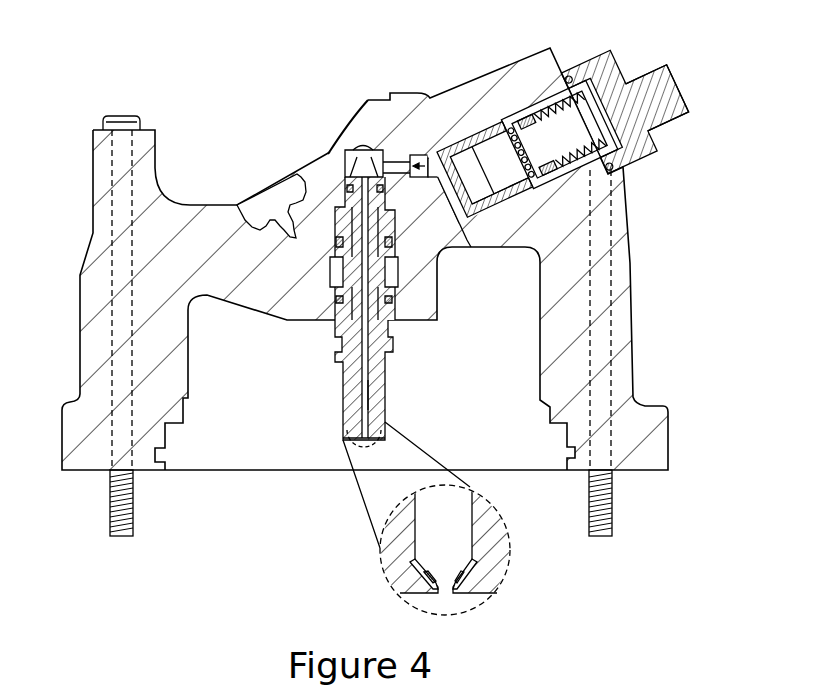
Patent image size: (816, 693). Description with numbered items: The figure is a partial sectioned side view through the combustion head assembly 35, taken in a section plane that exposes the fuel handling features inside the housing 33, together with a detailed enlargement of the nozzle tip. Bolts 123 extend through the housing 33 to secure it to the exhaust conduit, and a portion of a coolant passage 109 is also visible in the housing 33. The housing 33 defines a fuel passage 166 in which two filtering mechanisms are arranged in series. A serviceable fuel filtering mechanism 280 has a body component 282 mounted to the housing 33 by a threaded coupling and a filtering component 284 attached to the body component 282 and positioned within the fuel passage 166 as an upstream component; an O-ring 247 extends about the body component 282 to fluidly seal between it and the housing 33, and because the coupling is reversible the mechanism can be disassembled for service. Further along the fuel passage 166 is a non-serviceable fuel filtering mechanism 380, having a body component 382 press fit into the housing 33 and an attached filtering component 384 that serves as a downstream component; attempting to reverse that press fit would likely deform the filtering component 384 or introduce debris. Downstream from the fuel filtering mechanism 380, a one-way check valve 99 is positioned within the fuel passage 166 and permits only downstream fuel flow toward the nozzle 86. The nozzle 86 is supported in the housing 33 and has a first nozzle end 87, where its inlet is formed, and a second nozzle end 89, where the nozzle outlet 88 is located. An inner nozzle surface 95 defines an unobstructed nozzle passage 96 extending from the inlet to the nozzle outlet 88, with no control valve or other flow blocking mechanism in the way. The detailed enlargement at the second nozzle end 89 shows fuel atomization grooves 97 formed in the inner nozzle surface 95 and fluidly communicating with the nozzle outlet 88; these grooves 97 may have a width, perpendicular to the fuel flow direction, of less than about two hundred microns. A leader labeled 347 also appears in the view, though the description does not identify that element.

The housing 33 is at (93, 232).
The assembly 35 is at (75, 160).
The nozzle 86 is at (343, 392).
The first nozzle end 87 is at (328, 150).
The nozzle outlet 88 is at (372, 156).
The second nozzle end 89 is at (345, 438).
The inner nozzle surface 95 is at (362, 373).
The nozzle passage 96 is at (367, 392).
The fuel atomization grooves 97 is at (425, 565).
The one-way check valve 99 is at (418, 155).
The coolant passage 109 is at (260, 196).
The bolts 123 is at (110, 502).
The fuel passage 166 is at (562, 173).
The O-ring 247 is at (570, 42).
The fuel filtering mechanism 280 is at (594, 145).
The body component 282 is at (622, 209).
The filtering component 284 is at (670, 127).
The passage 347 is at (487, 213).
The non-serviceable fuel filtering mechanism 380 is at (468, 133).
The body component 382 is at (513, 219).
The filtering component 384 is at (506, 109).